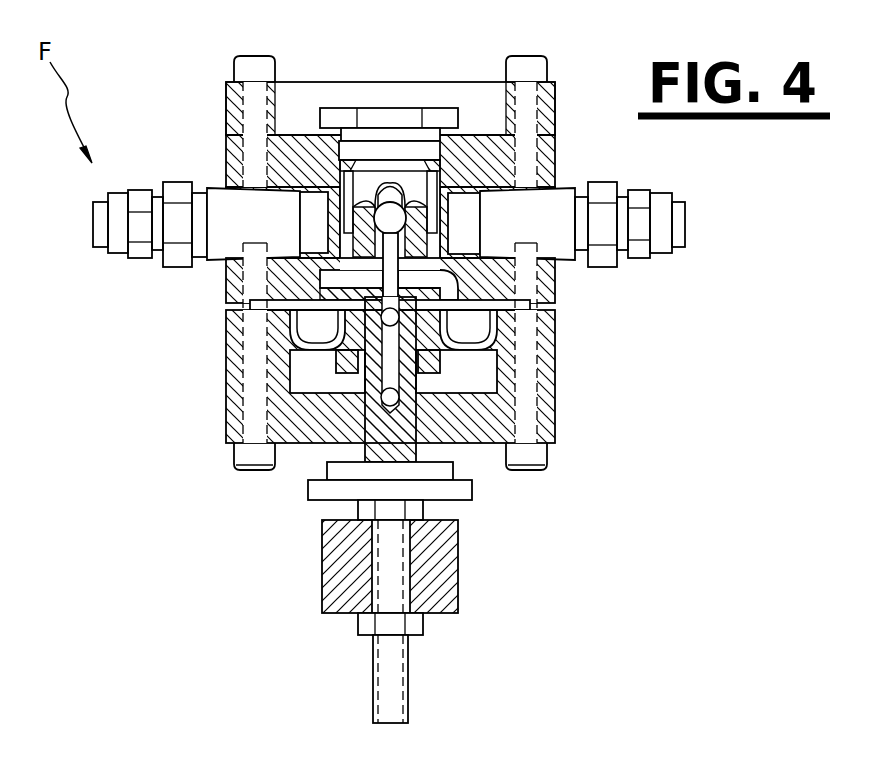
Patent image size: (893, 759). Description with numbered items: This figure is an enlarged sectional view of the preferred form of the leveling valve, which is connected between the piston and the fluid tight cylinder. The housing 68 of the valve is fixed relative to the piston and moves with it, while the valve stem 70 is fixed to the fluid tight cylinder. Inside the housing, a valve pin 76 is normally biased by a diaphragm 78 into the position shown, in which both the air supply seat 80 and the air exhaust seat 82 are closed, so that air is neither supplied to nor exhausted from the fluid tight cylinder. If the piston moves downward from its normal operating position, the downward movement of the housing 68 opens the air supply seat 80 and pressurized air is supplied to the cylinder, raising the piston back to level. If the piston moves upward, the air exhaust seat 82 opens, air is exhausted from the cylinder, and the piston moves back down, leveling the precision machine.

The housing 68 is at (389, 380).
The valve stem 70 is at (398, 680).
The valve pin 76 is at (240, 282).
The diaphragm 78 is at (556, 368).
The air supply seat 80 is at (400, 203).
The air exhaust seat 82 is at (445, 358).